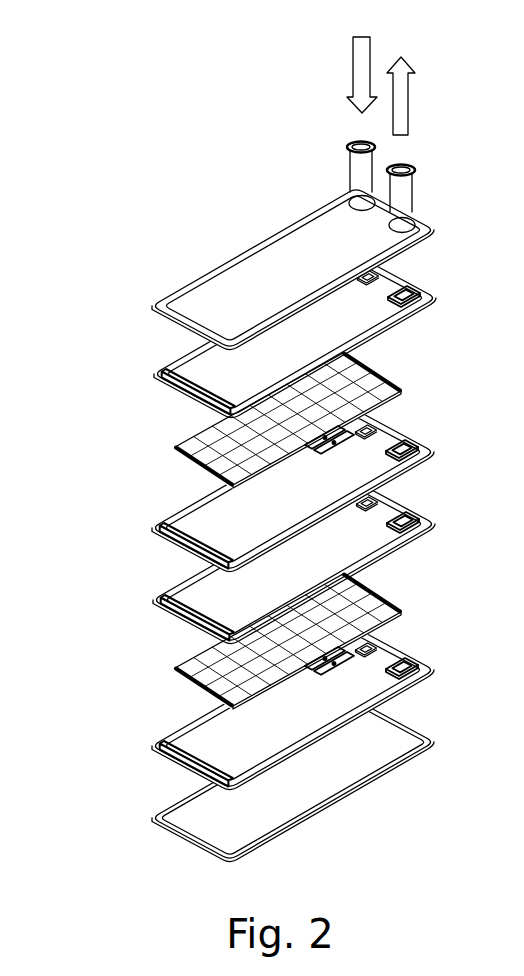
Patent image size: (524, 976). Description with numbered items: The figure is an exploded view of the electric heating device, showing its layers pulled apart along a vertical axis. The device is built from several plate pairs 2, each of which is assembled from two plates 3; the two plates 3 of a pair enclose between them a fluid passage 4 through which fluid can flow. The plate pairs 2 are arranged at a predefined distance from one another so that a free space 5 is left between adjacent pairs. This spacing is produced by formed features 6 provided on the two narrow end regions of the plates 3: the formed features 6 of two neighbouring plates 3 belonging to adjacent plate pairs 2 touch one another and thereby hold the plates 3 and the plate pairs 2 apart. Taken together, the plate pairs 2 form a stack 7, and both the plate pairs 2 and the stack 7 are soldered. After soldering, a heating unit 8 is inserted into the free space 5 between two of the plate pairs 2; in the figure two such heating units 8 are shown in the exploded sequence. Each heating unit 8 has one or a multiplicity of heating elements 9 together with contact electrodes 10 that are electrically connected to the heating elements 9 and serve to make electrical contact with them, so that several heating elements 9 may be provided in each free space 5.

The plate pair 2 is at (129, 302).
The plate 3 is at (425, 219).
The fluid passage 4 is at (163, 380).
The free space 5 is at (420, 374).
The formed feature 6 is at (413, 283).
The stack 7 is at (72, 302).
The heating unit 8 is at (365, 383).
The heating element 9 is at (193, 453).
The contact electrode 10 is at (304, 668).